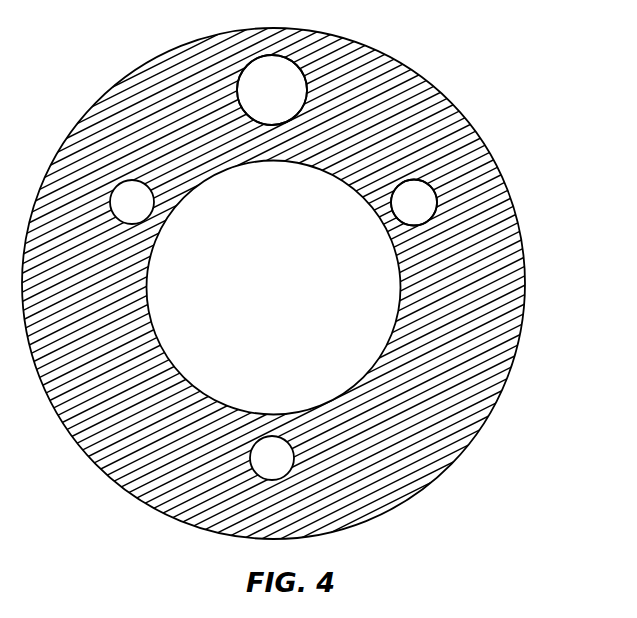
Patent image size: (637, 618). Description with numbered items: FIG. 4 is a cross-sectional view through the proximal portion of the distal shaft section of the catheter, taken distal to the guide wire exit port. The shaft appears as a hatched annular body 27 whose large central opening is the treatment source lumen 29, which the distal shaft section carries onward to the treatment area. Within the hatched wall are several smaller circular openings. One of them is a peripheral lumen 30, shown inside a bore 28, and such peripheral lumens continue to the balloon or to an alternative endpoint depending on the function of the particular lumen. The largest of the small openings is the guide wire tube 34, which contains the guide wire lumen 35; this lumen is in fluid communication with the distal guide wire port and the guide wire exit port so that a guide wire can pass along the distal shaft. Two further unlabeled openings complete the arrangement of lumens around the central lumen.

The plate 27 is at (392, 332).
The hole 28 is at (437, 192).
The treatment source lumen 29 is at (287, 301).
The peripheral lumen 30 is at (427, 215).
The guide wire tube 34 is at (303, 73).
The guide wire lumen 35 is at (286, 103).